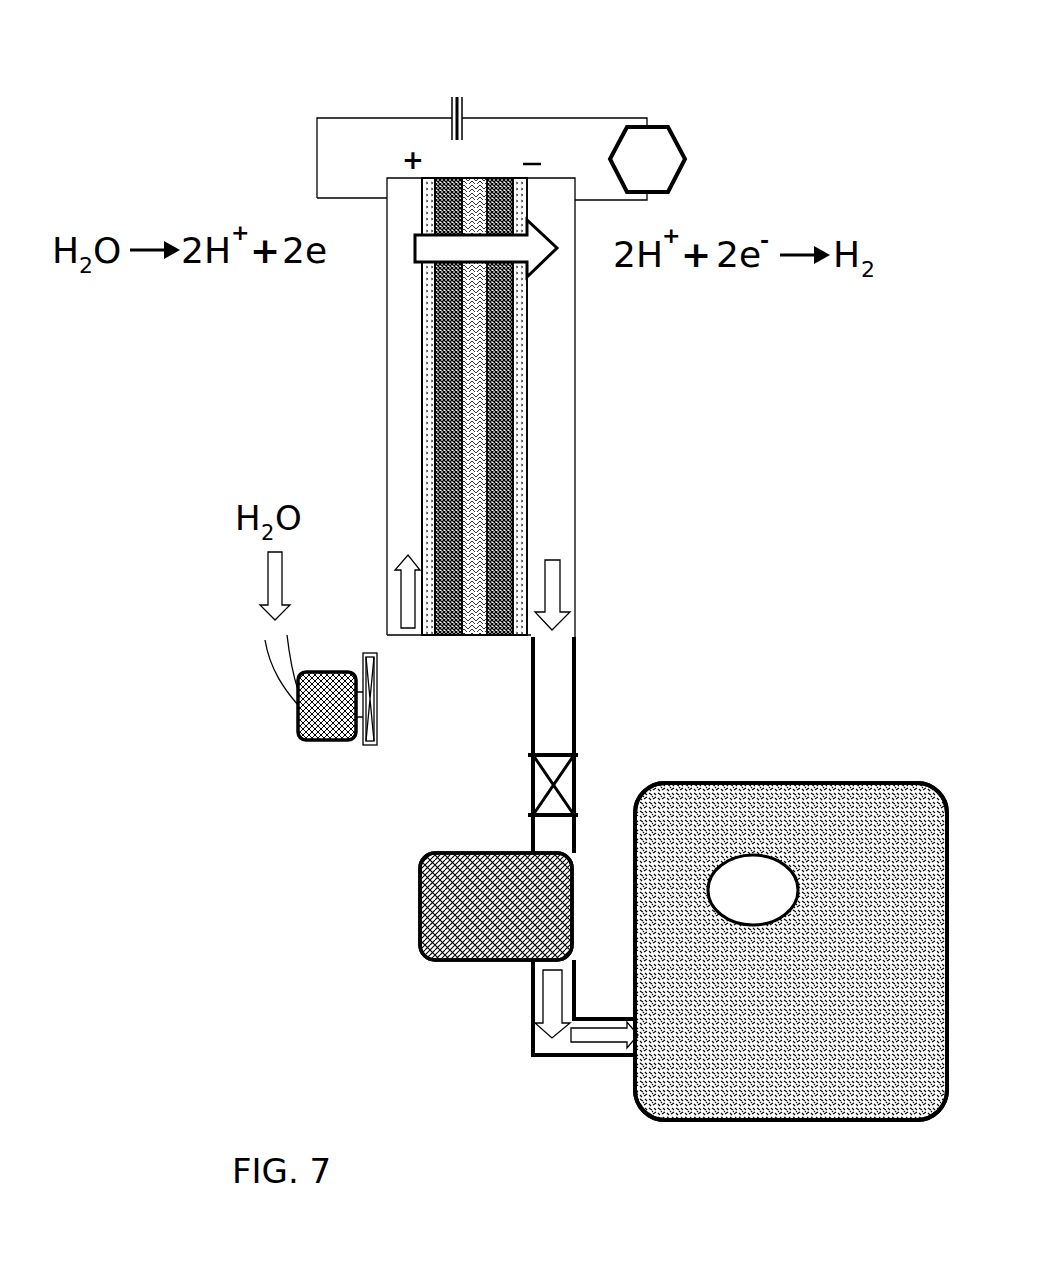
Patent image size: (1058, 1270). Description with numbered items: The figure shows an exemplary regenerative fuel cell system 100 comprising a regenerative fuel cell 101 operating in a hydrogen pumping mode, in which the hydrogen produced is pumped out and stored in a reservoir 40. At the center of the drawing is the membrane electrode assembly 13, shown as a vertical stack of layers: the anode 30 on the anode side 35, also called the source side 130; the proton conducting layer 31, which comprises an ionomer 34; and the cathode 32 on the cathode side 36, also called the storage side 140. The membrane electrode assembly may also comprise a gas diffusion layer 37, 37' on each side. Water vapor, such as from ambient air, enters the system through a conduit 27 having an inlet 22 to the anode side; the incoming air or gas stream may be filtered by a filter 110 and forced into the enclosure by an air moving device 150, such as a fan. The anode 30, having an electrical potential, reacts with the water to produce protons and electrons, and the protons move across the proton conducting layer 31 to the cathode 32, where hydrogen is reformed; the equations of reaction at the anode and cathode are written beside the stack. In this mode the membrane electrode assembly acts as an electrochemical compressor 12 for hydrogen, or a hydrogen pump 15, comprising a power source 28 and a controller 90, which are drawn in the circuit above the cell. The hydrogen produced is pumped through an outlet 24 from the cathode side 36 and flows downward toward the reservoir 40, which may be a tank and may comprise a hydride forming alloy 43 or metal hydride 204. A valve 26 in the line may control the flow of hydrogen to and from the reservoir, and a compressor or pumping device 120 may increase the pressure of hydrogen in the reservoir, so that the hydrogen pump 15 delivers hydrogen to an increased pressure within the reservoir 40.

The electrochemical compressor 12 is at (307, 115).
The regenerative fuel cell system 100 is at (332, 108).
The regenerative fuel cell 101 is at (315, 190).
The hydrogen pump 15 is at (410, 212).
The power source 28 is at (503, 119).
The controller 90 is at (642, 150).
The anode side 35 is at (435, 352).
The cathode side 36 is at (520, 332).
The storage side 140 is at (535, 356).
The anode 30 is at (432, 390).
The cathode 32 is at (520, 403).
The source side 130 is at (423, 422).
The membrane electrode assembly 13 is at (435, 470).
The gas diffusion layer 37 is at (355, 406).
The gas diffusion layer 37' is at (599, 406).
The inlet 22 is at (396, 640).
The conduit 27 is at (275, 647).
The outlet 24 is at (552, 642).
The filter 110 is at (315, 720).
The air moving device 150 is at (366, 746).
The proton conducting layer 31 is at (462, 637).
The ionomer 34 is at (472, 627).
The valve 26 is at (552, 775).
The hydride forming alloy 43 is at (720, 797).
The reservoir 40 is at (806, 790).
The metal hydride 204 is at (850, 797).
The compressor or pumping device 120 is at (420, 930).